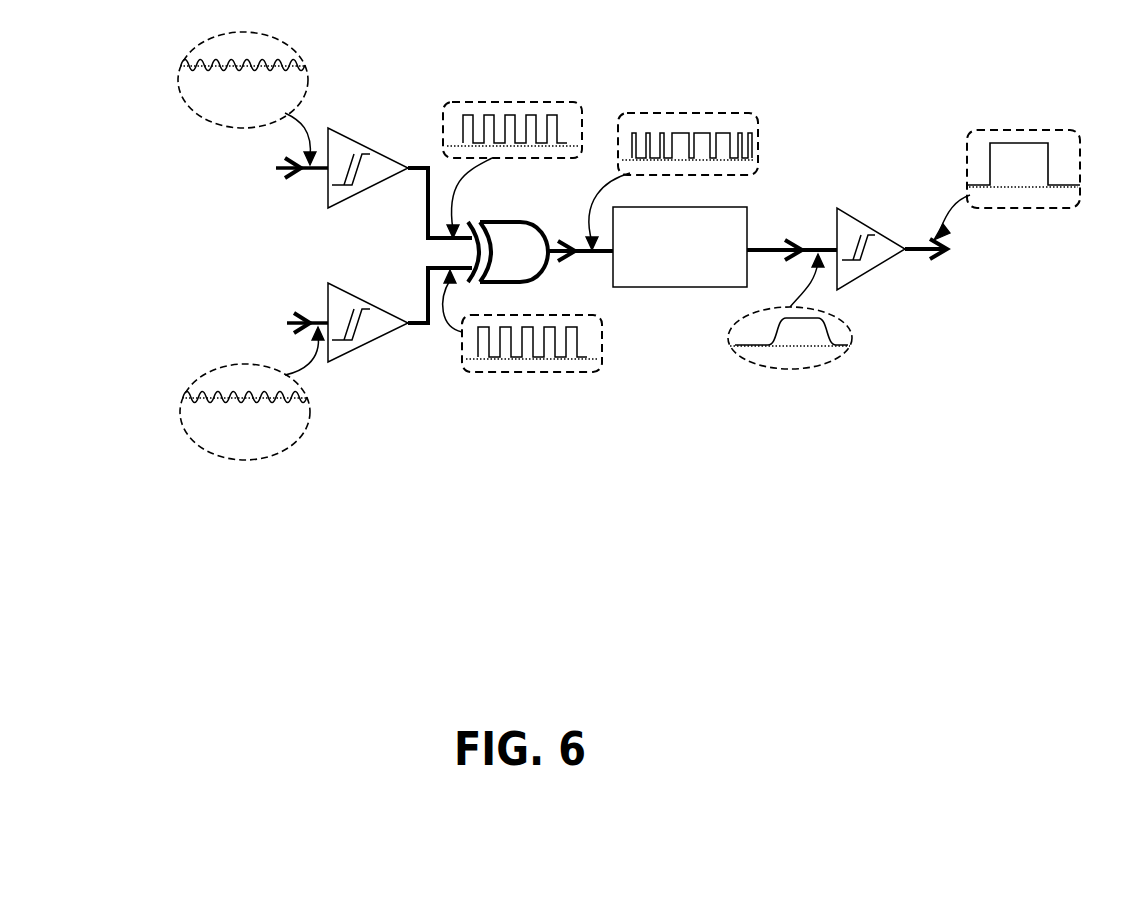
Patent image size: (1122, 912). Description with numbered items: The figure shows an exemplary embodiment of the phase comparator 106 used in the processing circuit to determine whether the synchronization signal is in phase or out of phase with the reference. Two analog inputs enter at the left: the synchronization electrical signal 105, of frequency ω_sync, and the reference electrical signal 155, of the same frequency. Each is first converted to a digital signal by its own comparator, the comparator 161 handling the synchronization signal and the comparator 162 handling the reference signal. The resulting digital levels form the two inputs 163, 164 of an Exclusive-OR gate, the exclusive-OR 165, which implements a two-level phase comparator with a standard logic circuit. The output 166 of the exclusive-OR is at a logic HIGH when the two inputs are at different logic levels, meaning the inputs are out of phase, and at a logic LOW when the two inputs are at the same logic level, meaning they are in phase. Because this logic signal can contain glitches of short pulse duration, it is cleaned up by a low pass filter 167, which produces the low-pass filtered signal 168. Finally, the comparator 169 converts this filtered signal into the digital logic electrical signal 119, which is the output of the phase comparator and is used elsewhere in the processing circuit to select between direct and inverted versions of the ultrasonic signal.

The phase comparator 106 is at (1012, 52).
The synchronization electrical signal 105 is at (317, 177).
The reference electrical signal 155 is at (313, 325).
The comparator 161 is at (342, 147).
The comparator 162 is at (378, 330).
The input 163 is at (424, 162).
The input 164 is at (424, 315).
The exclusive-OR 165 is at (515, 237).
The output of the exclusive-OR 166 is at (602, 253).
The low-pass filter 167 is at (728, 267).
The low-pass filtered signal 168 is at (770, 246).
The comparator 169 is at (848, 232).
The logic electrical signal 119 is at (920, 250).